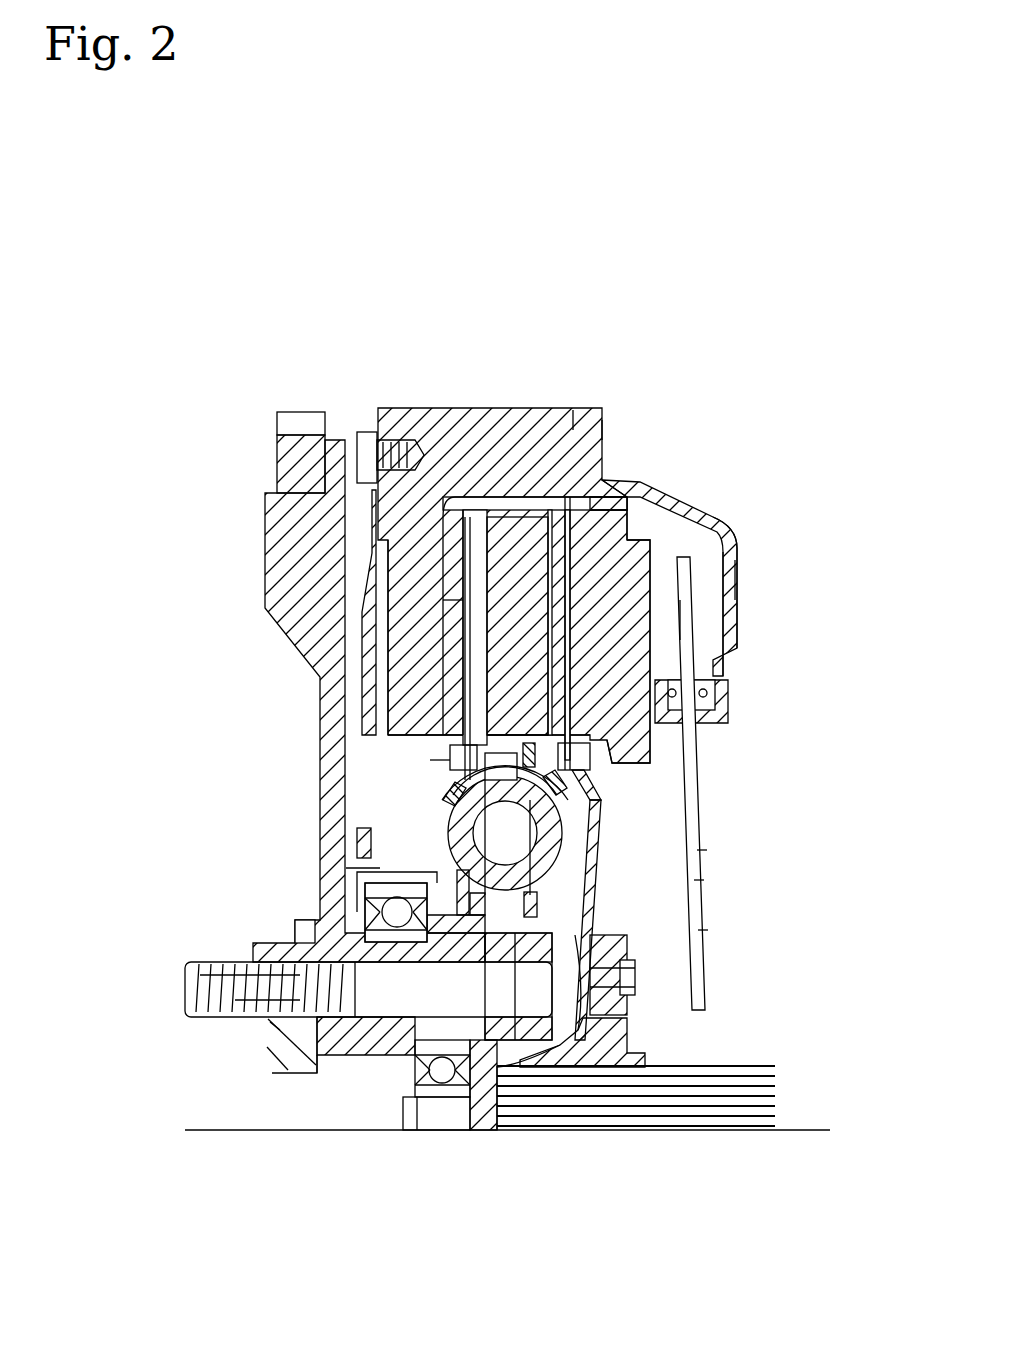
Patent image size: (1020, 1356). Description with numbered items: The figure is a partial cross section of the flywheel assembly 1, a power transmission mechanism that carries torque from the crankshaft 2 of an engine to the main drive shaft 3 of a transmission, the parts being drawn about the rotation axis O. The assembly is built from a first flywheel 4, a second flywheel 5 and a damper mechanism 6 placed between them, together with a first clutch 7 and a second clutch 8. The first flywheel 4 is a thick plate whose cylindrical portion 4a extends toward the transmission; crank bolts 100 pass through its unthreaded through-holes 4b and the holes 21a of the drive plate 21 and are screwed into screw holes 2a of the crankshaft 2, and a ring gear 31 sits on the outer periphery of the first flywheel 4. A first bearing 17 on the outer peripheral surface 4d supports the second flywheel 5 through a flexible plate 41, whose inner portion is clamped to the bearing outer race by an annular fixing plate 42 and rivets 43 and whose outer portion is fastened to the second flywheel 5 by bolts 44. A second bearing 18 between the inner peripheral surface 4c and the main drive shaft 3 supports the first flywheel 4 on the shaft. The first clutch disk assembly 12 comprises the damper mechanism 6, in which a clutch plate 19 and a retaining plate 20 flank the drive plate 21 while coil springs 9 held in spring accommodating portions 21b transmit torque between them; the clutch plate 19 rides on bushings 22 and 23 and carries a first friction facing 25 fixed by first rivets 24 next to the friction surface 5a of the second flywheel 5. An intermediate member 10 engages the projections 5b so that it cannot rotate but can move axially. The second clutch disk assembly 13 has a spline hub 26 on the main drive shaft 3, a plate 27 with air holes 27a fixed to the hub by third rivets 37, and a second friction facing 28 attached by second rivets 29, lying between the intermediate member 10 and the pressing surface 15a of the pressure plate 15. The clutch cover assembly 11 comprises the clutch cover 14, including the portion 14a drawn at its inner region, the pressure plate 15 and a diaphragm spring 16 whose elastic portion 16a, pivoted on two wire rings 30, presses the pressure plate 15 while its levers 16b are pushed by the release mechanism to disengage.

The flywheel assembly 1 is at (694, 317).
The crankshaft 2 is at (280, 958).
The screw holes 2a is at (200, 975).
The main drive shaft 3 is at (760, 1060).
The first flywheel 4 is at (315, 648).
The cylindrical portion 4a is at (504, 986).
The axial through-holes 4b is at (383, 1020).
The inner peripheral surface 4c is at (492, 1040).
The outer peripheral surface 4d is at (296, 918).
The second flywheel 5 is at (403, 572).
The friction surface 5a is at (447, 520).
The projections 5b is at (572, 410).
The damper mechanism 6 is at (563, 882).
The first clutch 7 is at (473, 515).
The second clutch 8 is at (567, 515).
The coil springs 9 is at (556, 836).
The intermediate member 10 is at (510, 525).
The clutch cover assembly 11 is at (772, 477).
The first clutch disk assembly 12 is at (430, 779).
The second clutch disk assembly 13 is at (645, 951).
The clutch cover 14 is at (730, 570).
The channel portion of cover 14a is at (695, 740).
The pressure plate 15 is at (573, 570).
The pressing surface 15a is at (724, 580).
The diaphragm spring 16 is at (690, 770).
The annular elastic portion 16a is at (685, 617).
The levers 16b is at (700, 890).
The first bearing 17 is at (368, 905).
The second bearing 18 is at (405, 1087).
The clutch plate 19 is at (460, 870).
The retaining plate 20 is at (537, 910).
The drive plate 21 is at (574, 1045).
The holes 21a is at (520, 1090).
The spring accommodating portions 21b is at (545, 808).
The bushing 22 is at (380, 868).
The bushing 23 is at (270, 1022).
The first rivets 24 is at (440, 758).
The first friction facing 25 is at (440, 680).
The spline hub 26 is at (620, 1035).
The plate 27 is at (695, 928).
The holes 27a is at (703, 857).
The second friction facing 28 is at (638, 478).
The second rivets 29 is at (587, 760).
The wire rings 30 is at (712, 700).
The ring gear 31 is at (280, 447).
The third rivets 37 is at (633, 985).
The flexible plate 41 is at (356, 586).
The annular fixing plate 42 is at (370, 840).
The rivets 43 is at (360, 875).
The bolts 44 is at (362, 440).
The crank bolts 100 is at (235, 1000).
The axis O is at (505, 1133).